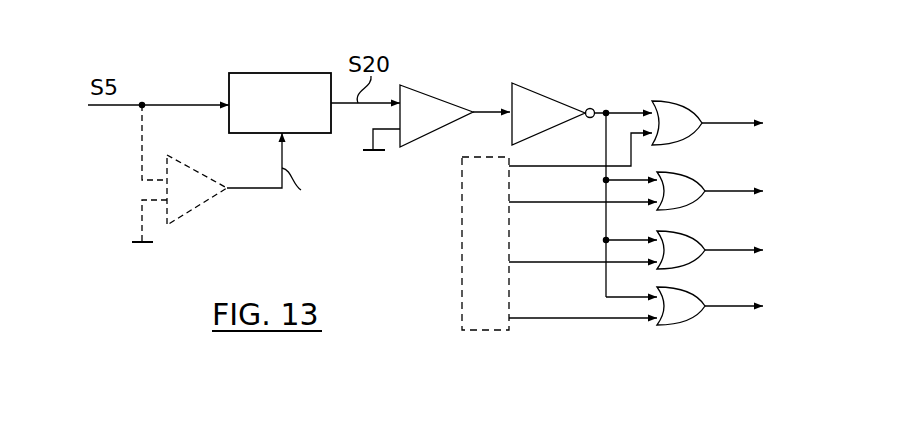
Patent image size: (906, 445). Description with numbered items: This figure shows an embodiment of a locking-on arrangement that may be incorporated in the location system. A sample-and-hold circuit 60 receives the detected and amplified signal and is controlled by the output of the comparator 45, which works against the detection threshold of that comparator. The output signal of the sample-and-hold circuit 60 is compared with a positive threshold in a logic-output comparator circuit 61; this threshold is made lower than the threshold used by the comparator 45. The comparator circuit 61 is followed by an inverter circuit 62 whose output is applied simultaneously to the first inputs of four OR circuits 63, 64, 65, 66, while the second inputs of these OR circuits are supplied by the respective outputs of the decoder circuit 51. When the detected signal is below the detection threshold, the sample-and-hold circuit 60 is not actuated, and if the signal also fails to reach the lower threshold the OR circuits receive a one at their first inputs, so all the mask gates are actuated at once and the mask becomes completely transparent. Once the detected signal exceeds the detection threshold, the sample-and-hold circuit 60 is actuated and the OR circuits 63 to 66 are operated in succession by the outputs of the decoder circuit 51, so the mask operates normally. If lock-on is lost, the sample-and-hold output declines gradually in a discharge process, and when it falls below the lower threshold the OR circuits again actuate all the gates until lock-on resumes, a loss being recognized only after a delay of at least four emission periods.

The sample-and-hold circuit 60 is at (318, 73).
The comparator 45 is at (183, 164).
The logic-output comparator circuit 61 is at (425, 93).
The inverter circuit 62 is at (545, 96).
The OR circuit 63 is at (664, 104).
The OR circuit 64 is at (681, 174).
The OR circuit 65 is at (688, 233).
The OR circuit 66 is at (690, 289).
The decoder circuit 51 is at (462, 235).